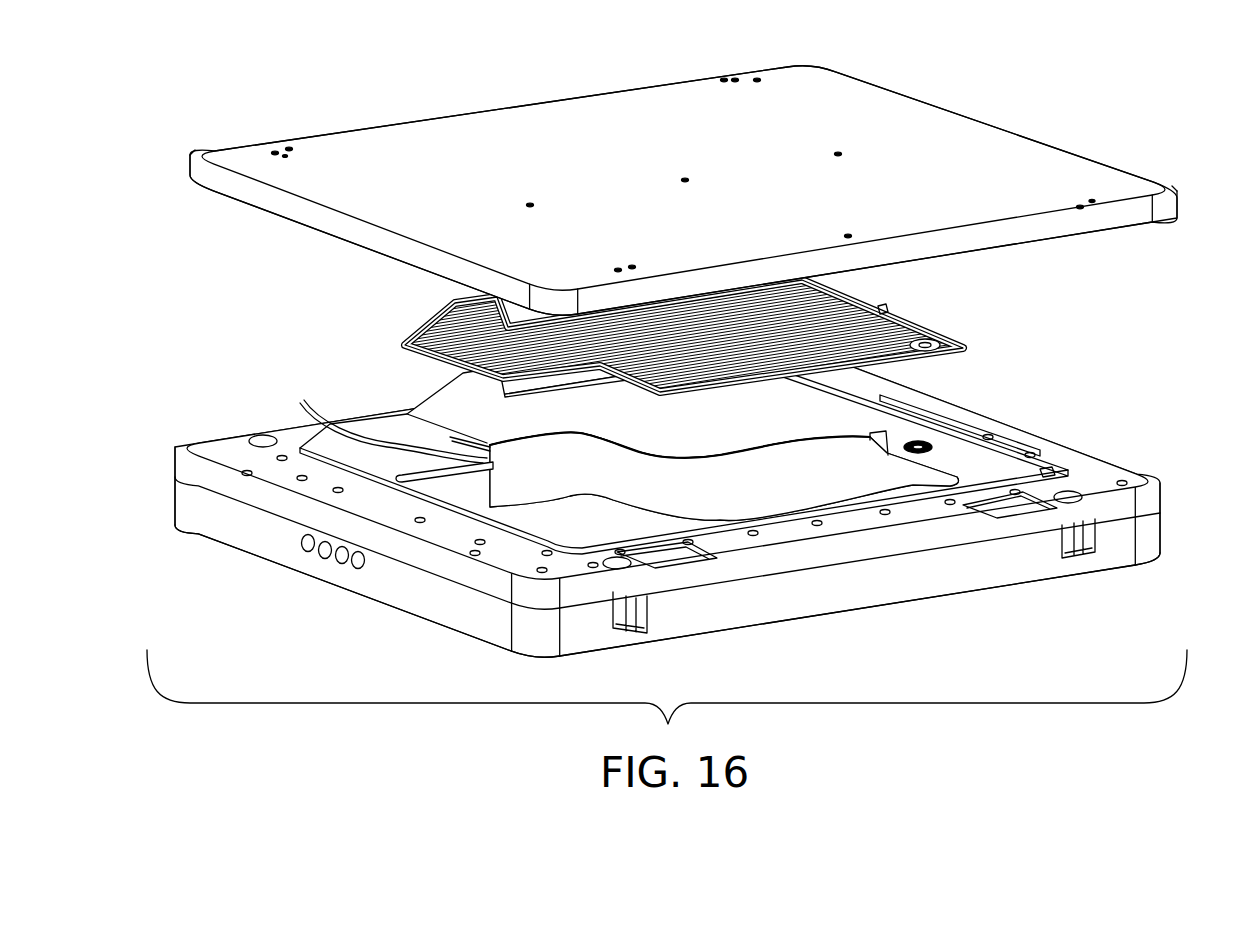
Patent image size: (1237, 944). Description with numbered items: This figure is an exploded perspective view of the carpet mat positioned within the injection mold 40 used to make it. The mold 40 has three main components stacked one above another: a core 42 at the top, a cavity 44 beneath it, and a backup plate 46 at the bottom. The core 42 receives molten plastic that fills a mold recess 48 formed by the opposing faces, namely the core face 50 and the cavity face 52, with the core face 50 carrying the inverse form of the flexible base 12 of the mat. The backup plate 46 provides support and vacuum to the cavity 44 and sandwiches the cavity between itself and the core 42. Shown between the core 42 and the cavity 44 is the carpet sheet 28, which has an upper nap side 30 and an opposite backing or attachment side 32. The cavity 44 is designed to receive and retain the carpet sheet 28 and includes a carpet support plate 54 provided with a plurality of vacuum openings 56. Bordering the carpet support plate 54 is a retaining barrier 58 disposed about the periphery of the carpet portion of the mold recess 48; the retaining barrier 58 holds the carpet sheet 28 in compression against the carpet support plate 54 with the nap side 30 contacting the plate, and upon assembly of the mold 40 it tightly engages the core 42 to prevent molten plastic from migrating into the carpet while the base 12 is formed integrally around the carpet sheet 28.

The injection mold 40 is at (680, 378).
The core 42 is at (190, 172).
The core face 50 is at (684, 191).
The flexible base 12 is at (713, 340).
The backing or attachment side 32 is at (863, 400).
The carpet sheet 28 is at (709, 457).
The nap side 30 is at (913, 418).
The retaining barrier 58 is at (967, 467).
The carpet support plate 54 is at (745, 493).
The mold recess 48 is at (400, 400).
The vacuum openings 56 is at (382, 420).
The cavity face 52 is at (213, 453).
The cavity 44 is at (643, 465).
The backup plate 46 is at (192, 513).